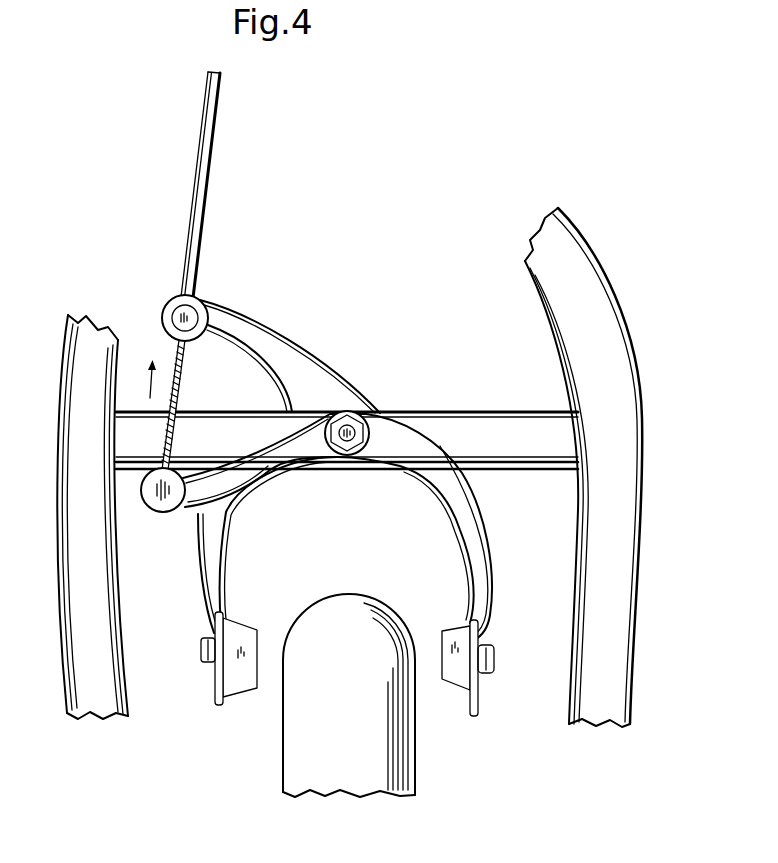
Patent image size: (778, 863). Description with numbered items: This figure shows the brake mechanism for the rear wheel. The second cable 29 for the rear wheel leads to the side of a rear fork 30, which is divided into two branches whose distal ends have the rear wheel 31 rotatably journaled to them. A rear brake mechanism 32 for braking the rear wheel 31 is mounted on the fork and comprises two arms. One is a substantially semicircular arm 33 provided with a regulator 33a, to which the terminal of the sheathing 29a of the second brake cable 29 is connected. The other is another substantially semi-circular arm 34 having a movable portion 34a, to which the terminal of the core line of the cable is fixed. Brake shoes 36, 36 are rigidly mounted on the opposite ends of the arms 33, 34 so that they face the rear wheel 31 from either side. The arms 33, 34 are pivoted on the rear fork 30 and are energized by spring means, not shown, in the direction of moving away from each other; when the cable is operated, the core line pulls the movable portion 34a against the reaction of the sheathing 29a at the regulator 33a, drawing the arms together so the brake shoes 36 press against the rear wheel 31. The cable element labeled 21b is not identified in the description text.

The second cable 29 is at (197, 185).
The sheathing 29a is at (200, 232).
The brake cable 21b is at (182, 373).
The rear fork 30 is at (610, 290).
The rear wheel 31 is at (395, 768).
The rear brake mechanism 32 is at (386, 284).
The substantially semicircular arm 33 is at (220, 561).
The regulator 33a is at (173, 312).
The substantially semi-circular arm 34 is at (463, 540).
The movable portion 34a is at (168, 507).
The brake shoes 36 is at (236, 683).